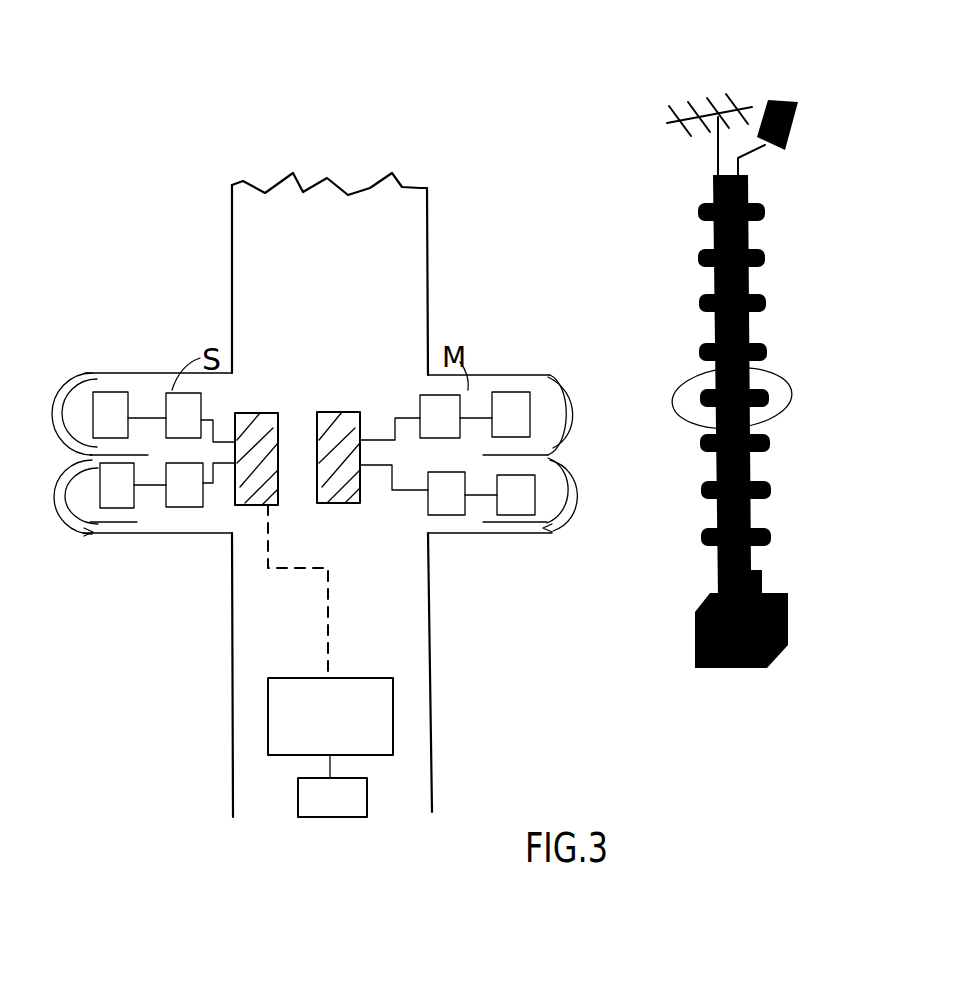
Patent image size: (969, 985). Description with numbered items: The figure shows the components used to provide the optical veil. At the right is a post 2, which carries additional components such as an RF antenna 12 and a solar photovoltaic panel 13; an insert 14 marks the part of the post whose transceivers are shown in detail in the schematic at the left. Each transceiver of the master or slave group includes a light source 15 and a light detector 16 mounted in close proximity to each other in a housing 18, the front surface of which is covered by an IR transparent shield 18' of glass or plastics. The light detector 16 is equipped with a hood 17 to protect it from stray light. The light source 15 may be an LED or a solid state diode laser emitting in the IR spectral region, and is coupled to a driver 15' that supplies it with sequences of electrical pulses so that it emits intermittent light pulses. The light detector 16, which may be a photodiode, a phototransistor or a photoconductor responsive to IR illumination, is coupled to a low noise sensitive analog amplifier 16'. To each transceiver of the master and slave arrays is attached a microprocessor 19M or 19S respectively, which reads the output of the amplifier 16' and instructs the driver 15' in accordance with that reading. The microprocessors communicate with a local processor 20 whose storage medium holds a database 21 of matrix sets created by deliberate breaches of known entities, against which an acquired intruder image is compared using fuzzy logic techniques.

The post 2 is at (807, 215).
The RF antenna 12 is at (693, 102).
The solar photovoltaic panel 13 is at (782, 97).
The insert 14 is at (792, 383).
The light source 15 is at (311, 415).
The driver 15' is at (313, 417).
The light detector 16 is at (317, 489).
The low noise sensitive analog amplifier 16' is at (315, 489).
The hood 17 is at (118, 522).
The housing 18 is at (310, 429).
The IR transparent shield 18' is at (312, 454).
The microprocessor 19S is at (240, 412).
The microprocessor 19M is at (328, 412).
The local processor 20 is at (330, 630).
The database 21 is at (332, 786).